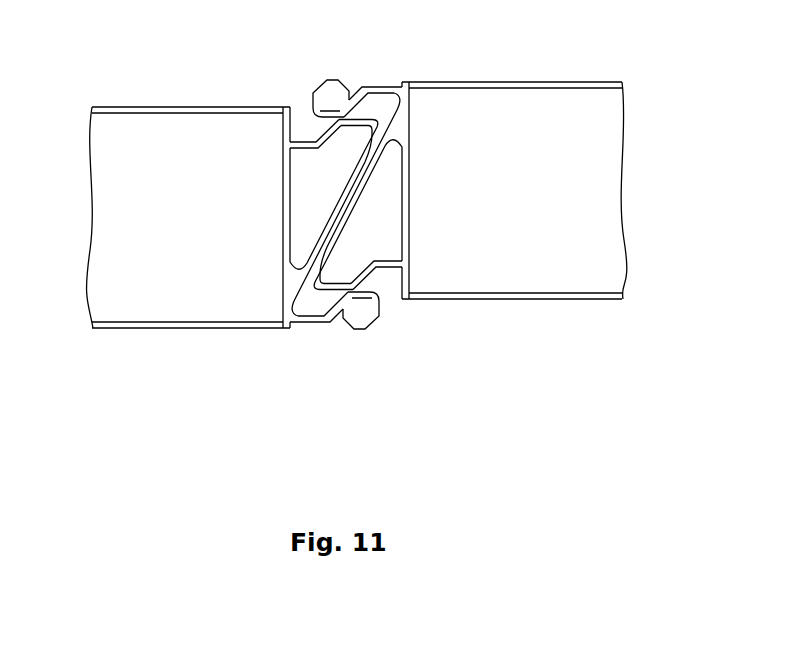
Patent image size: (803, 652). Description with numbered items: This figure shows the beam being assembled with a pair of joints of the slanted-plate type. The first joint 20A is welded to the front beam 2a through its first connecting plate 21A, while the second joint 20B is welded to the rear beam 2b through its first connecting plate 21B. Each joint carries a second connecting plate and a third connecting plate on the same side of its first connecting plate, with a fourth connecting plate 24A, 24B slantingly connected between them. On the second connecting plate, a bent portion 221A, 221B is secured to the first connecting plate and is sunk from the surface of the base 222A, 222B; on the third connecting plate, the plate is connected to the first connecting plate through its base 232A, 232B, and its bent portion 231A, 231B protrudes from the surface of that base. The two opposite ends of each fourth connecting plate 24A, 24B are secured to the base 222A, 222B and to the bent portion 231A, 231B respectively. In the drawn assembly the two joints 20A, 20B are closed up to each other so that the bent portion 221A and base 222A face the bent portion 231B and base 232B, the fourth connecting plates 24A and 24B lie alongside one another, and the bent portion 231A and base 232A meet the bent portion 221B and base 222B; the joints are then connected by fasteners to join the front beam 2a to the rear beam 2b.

The first joint 20A is at (296, 215).
The second joint 20B is at (484, 206).
The front beam 2a is at (157, 253).
The rear beam 2b is at (545, 222).
The first connecting plate 21A is at (280, 236).
The first connecting plate 21B is at (451, 176).
The fourth connecting plate 24A is at (352, 192).
The fourth connecting plate 24B is at (347, 212).
The bent portion 221A is at (325, 133).
The bent portion 221B is at (368, 272).
The base 222A is at (347, 123).
The base 222B is at (333, 288).
The bent portion 231A is at (342, 307).
The bent portion 231B is at (350, 98).
The base 232A is at (317, 313).
The base 232B is at (378, 96).